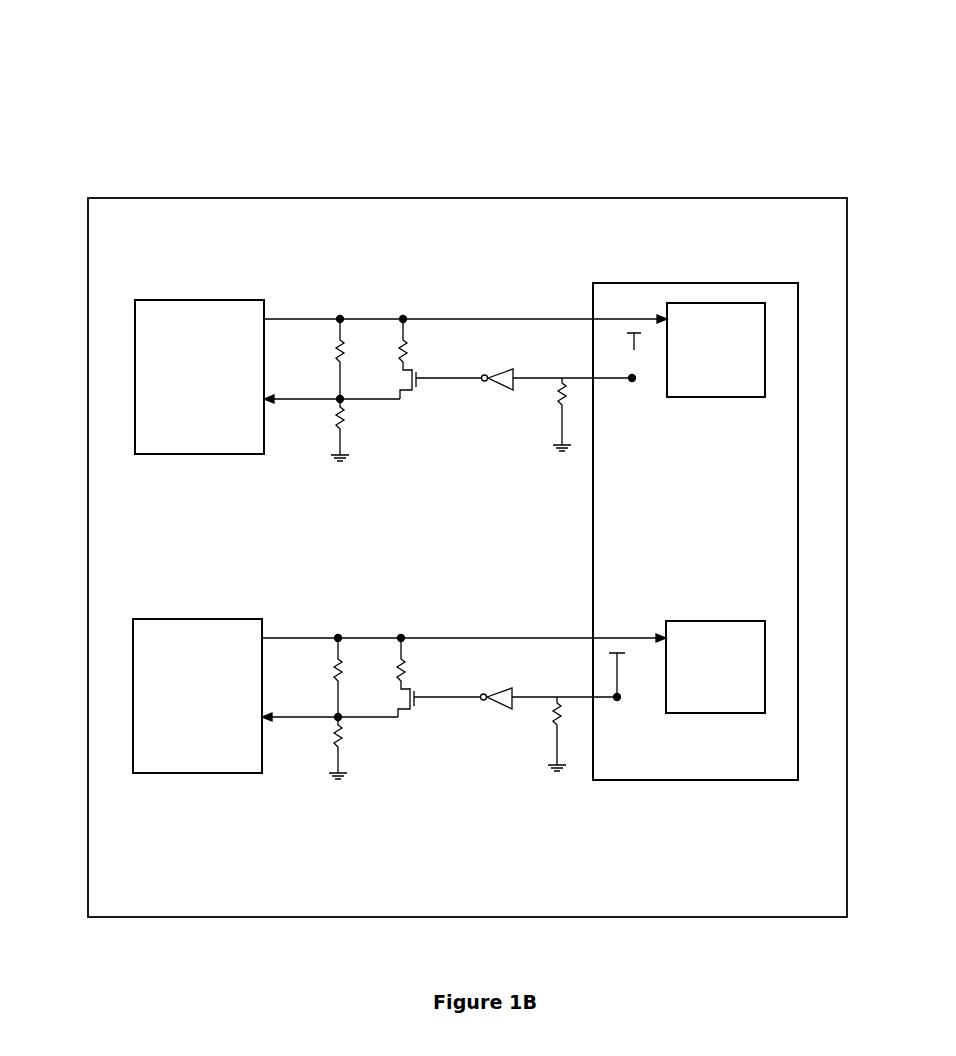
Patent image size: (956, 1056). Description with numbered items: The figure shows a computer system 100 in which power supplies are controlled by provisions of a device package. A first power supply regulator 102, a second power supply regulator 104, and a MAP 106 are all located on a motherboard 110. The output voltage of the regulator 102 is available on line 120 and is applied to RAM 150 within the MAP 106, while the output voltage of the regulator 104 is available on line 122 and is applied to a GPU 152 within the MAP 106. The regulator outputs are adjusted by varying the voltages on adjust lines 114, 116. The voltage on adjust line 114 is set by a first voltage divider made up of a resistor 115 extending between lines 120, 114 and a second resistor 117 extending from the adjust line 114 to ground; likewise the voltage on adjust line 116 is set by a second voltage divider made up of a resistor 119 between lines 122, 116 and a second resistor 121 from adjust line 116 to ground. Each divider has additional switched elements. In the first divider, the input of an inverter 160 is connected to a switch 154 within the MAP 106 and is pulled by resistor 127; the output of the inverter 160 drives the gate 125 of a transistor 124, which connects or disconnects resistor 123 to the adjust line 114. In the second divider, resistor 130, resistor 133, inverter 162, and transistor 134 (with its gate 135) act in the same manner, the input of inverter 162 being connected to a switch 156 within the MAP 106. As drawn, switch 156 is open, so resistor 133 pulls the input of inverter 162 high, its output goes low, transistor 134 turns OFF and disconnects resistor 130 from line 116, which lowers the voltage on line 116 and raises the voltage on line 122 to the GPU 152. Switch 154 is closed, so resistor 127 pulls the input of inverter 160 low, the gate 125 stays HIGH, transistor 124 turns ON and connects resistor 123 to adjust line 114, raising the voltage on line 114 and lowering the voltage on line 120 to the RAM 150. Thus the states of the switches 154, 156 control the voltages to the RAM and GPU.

The system 100 is at (705, 142).
The motherboard 110 is at (822, 897).
The first power supply regulator 102 is at (220, 401).
The second power supply regulator 104 is at (218, 719).
The MAP (Mobile Accelerated Graphics Port Package) 106 is at (733, 534).
The RAM 150 is at (735, 374).
The GPU 152 is at (735, 692).
The line 120 is at (378, 317).
The line 122 is at (378, 636).
The adjust line 114 is at (390, 400).
The adjust line 116 is at (389, 718).
The resistor 115 is at (337, 349).
The second resistor 117 is at (336, 426).
The resistor 119 is at (335, 668).
The second resistor 121 is at (334, 745).
The resistor 123 is at (400, 349).
The resistor 130 is at (398, 668).
The gate 125 is at (416, 373).
The transistor 135 is at (415, 692).
The transistor 124 is at (415, 389).
The transistor 134 is at (414, 708).
The resistor 127 is at (561, 400).
The resistor 133 is at (555, 721).
The inverter 160 is at (500, 369).
The inverter 162 is at (500, 688).
The switch 154 is at (632, 381).
The switch 156 is at (619, 700).